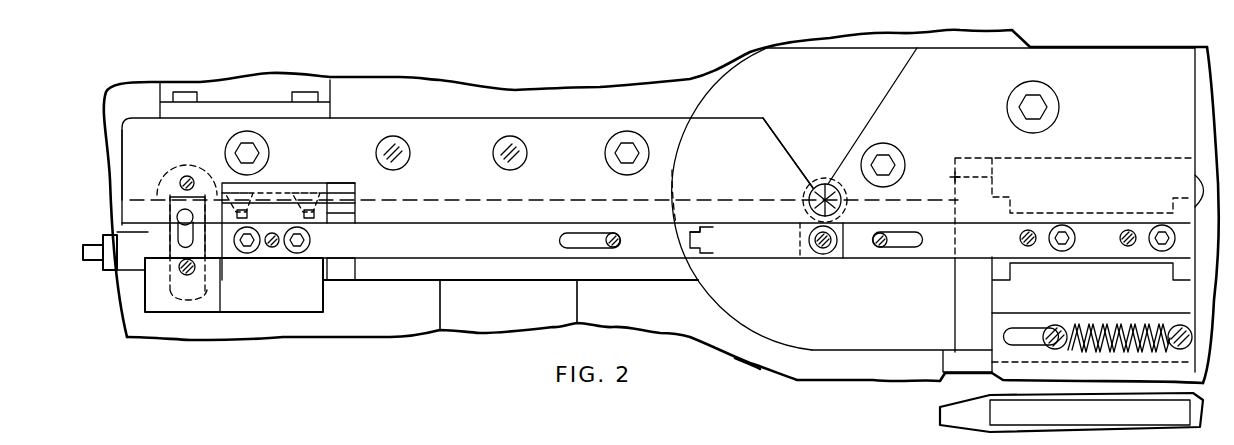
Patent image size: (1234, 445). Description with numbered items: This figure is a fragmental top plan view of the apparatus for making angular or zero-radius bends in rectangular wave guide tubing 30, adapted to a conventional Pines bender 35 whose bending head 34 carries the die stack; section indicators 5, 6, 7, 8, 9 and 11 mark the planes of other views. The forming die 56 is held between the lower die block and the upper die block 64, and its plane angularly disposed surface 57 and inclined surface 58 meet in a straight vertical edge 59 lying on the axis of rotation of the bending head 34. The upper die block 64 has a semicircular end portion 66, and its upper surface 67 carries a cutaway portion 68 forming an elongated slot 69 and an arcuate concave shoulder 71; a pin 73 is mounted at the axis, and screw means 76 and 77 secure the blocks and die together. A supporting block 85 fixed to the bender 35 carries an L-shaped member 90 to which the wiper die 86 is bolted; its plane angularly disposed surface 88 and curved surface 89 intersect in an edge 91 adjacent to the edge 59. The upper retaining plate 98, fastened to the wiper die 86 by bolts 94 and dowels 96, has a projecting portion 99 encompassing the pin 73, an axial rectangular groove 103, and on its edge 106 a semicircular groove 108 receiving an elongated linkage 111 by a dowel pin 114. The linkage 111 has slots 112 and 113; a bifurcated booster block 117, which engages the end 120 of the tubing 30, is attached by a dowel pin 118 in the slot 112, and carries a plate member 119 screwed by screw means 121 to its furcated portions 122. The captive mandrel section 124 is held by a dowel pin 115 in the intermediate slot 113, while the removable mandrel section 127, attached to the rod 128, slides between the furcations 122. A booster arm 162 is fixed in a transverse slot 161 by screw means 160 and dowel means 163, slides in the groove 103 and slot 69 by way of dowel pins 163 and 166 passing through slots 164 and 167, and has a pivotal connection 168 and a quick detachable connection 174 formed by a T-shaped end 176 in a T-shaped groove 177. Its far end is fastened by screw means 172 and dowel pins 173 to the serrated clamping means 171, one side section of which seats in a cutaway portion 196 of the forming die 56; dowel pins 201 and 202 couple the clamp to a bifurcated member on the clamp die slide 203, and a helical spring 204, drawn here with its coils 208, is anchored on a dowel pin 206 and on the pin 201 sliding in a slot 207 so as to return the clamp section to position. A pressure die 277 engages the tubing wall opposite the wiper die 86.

The section line 5- 5 is at (843, 378).
The section line 6- 6 is at (187, 352).
The section line 7- 7 is at (1208, 340).
The section line 8- 8 is at (1045, 378).
The section line 9- 9 is at (530, 342).
The section line 11- 11 is at (1213, 237).
The rectangular wave guide tubing 30 is at (340, 280).
The bending head 34 is at (1206, 112).
The Pines bender 35 is at (760, 369).
The forming die 56 is at (992, 177).
The plane angularly disposed surface 57 is at (870, 127).
The inclined surface 58 is at (846, 208).
The straight vertical edge 59 is at (854, 233).
The upper die block 64 is at (898, 100).
The semicircular end portion 66 is at (730, 321).
The upper surface 67 is at (712, 302).
The cutaway portion 68 is at (752, 62).
The elongated slot 69 is at (912, 222).
The arcuate concave shoulder 71 is at (853, 179).
The pin 73 is at (808, 208).
The screw means 76 is at (895, 155).
The screw means 77 is at (1050, 100).
The supporting block 85 is at (437, 83).
The wiper die 86 is at (738, 201).
The plane angularly disposed surface 88 is at (793, 152).
The curved surface 89 is at (810, 197).
The L-shaped member 90 is at (332, 96).
The edge 91 is at (800, 234).
The bolts 94 is at (265, 147).
The dowels 96 is at (495, 148).
The upper retaining plate 98 is at (656, 118).
The projecting portion 99 is at (835, 182).
The rectangular groove 103 is at (485, 224).
The edge 106 is at (141, 190).
The semicircular groove 108 is at (207, 190).
The elongated linkage 111 is at (170, 240).
The slot 112 is at (220, 300).
The intermediate slot 113 is at (193, 235).
The dowel pin 114 is at (191, 178).
The dowel pin 115 is at (177, 215).
The bifurcated booster block 117 is at (245, 315).
The dowel pin 118 is at (195, 272).
The plate member 119 is at (340, 177).
The end of the wave guide tubing 120 is at (355, 272).
The screw means 121 is at (272, 192).
The furcated portion 122 is at (355, 213).
The captive mandrel section 124 is at (108, 233).
The removable mandrel section 127 is at (142, 279).
The rod 128 is at (88, 248).
The screw means 160 is at (254, 229).
The slot 161 is at (304, 288).
The booster arm 162 is at (458, 224).
The dowel pin 163 is at (275, 248).
The slot 164 is at (585, 233).
The dowel pin 166 is at (879, 234).
The slot 167 is at (895, 250).
The pivotal connection 168 is at (820, 250).
The serrated clamping means 171 is at (1197, 190).
The screw means 172 is at (1160, 250).
The dowel pin 173 is at (1128, 230).
The quick detachable connection 174 is at (708, 226).
The T-shaped end 176 is at (690, 240).
The T-shaped groove 177 is at (700, 253).
The cutaway portion 196 is at (982, 158).
The dowel pin 201 is at (1060, 325).
The dowel pin 202 is at (1145, 355).
The clamp die slide 203 is at (948, 406).
The helical spring 204 is at (1143, 324).
The dowel pin 206 is at (1187, 326).
The slot 207 is at (1033, 328).
The coil spring 208 is at (1122, 322).
The pressure die 277 is at (440, 313).